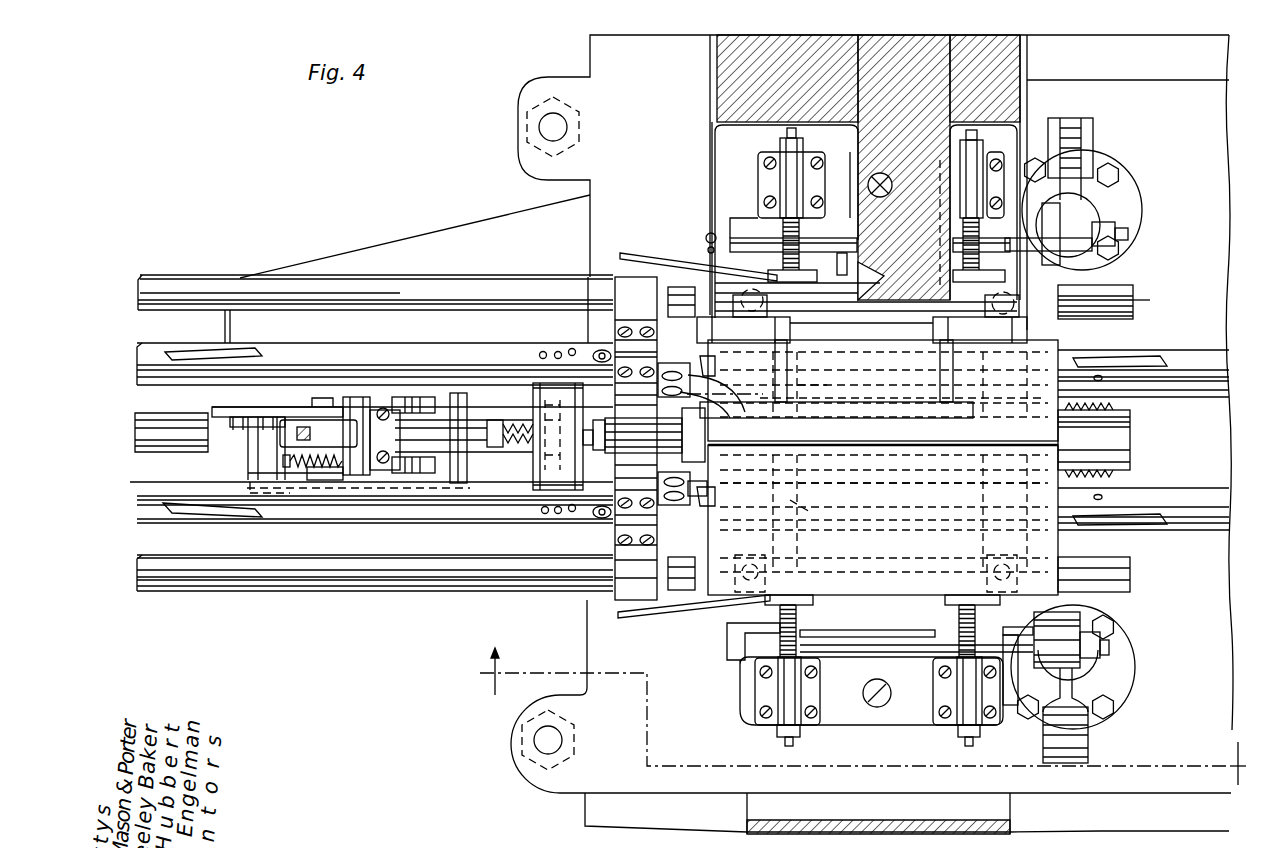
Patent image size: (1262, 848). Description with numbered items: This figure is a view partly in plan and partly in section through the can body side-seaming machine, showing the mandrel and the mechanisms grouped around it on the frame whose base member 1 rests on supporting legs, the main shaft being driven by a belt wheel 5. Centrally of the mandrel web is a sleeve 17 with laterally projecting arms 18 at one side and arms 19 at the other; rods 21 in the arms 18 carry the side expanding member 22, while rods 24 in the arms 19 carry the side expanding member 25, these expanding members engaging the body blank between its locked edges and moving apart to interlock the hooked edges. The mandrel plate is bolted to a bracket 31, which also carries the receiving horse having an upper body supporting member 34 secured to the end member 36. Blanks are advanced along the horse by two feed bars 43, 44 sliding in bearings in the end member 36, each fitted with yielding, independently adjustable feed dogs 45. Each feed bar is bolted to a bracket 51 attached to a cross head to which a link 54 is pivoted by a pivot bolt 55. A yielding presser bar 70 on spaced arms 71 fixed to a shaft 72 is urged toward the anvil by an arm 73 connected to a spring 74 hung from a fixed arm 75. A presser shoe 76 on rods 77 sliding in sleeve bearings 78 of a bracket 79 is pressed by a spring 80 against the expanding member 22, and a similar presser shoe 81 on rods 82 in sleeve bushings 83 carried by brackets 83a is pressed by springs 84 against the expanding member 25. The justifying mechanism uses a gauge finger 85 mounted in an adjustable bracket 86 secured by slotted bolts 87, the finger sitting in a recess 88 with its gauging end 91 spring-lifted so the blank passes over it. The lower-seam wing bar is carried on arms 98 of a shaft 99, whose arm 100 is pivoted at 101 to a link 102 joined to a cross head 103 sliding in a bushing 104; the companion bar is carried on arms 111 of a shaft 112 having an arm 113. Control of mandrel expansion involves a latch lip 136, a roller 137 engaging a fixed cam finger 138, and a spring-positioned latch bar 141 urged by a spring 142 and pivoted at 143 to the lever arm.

The base member 1 is at (736, 434).
The belt wheel 5 is at (857, 716).
The sleeve 17 is at (1132, 434).
The laterally projecting arms 18 is at (1088, 334).
The laterally projecting arms 19 is at (883, 525).
The rods 21 is at (1095, 302).
The side expanding member 22 is at (1135, 305).
The rods 24 is at (876, 564).
The side expanding member 25 is at (1132, 574).
The bracket 31 is at (355, 398).
The upper body supporting member 34 is at (452, 290).
The end member 36 is at (649, 438).
The feed bar 43 is at (470, 485).
The feed bar 44 is at (395, 355).
The feed dogs 45 is at (240, 352).
The bracket 51 is at (540, 470).
The link 54 is at (495, 420).
The pivot bolt 55 is at (541, 386).
The presser bar 70 is at (898, 412).
The arms 71 is at (942, 383).
The shaft 72 is at (862, 340).
The arm 73 is at (708, 250).
The spring 74 is at (706, 236).
The fixed arm 75 is at (715, 150).
The presser shoe 76 is at (640, 255).
The rods 77 is at (800, 137).
The sleeve bearings 78 is at (790, 168).
The bracket 79 is at (842, 185).
The spring 80 is at (792, 246).
The presser shoe 81 is at (688, 623).
The rods 82 is at (780, 742).
The sleeve bushings 83 is at (778, 692).
The brackets 83a is at (872, 712).
The springs 84 is at (785, 630).
The gauge finger 85 is at (814, 447).
The brackets 86 is at (882, 440).
The bolts 87 is at (680, 368).
The recess 88 is at (690, 486).
The gauging end 91 is at (704, 375).
The arms 98 is at (770, 628).
The shaft 99 is at (842, 640).
The arm 100 is at (1136, 678).
The pivot 101 is at (1095, 745).
The link 102 is at (1092, 755).
The cross head 103 is at (1082, 665).
The bushing 104 is at (1142, 205).
The arms 111 is at (790, 272).
The shaft 112 is at (1130, 234).
The arm 113 is at (1095, 160).
The lip 136 is at (442, 470).
The roller 137 is at (460, 394).
The cam finger 138 is at (415, 398).
The latch bar 141 is at (290, 432).
The spring 142 is at (325, 468).
The pivot 143 is at (318, 433).